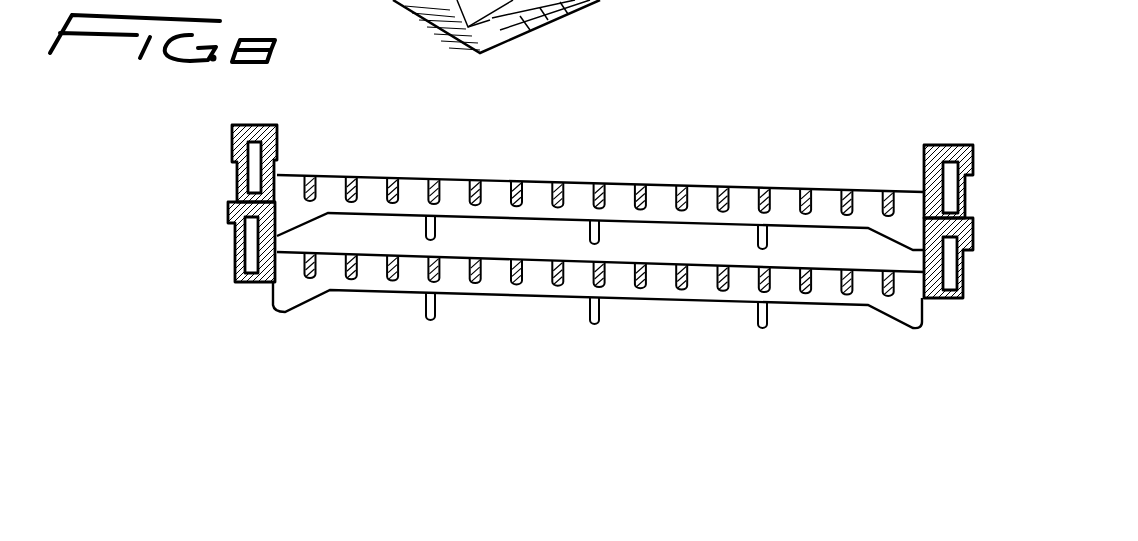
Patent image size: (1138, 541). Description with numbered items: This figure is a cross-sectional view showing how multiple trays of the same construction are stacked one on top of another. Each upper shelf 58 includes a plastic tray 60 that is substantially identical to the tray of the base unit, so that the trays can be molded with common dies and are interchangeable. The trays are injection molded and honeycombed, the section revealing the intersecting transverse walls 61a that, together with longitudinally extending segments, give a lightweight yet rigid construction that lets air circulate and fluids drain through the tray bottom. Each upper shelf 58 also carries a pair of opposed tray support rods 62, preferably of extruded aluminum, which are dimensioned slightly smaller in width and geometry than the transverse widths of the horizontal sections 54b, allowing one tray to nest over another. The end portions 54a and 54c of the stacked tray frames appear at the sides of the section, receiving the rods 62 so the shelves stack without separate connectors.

The left end bracket 54a is at (927, 170).
The horizontal sections 54b is at (942, 147).
The right end bracket lower portion 54c is at (973, 168).
The upper shelf 58 is at (435, 178).
The plastic tray 60 is at (527, 258).
The intersecting transverse walls 61a is at (598, 195).
The tray support rods 62 is at (968, 200).